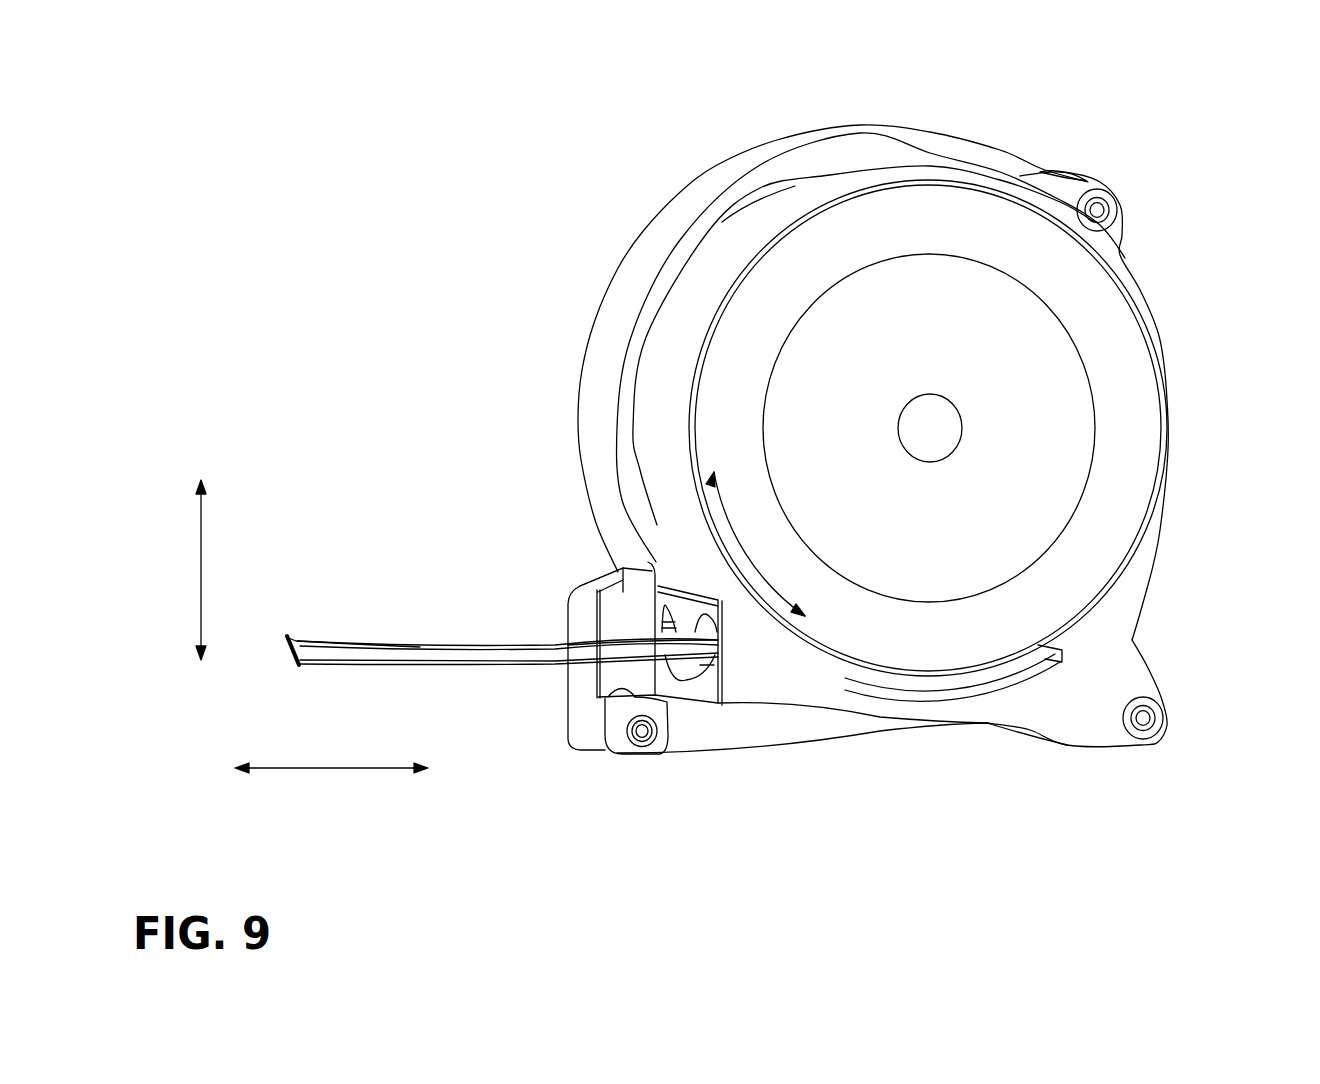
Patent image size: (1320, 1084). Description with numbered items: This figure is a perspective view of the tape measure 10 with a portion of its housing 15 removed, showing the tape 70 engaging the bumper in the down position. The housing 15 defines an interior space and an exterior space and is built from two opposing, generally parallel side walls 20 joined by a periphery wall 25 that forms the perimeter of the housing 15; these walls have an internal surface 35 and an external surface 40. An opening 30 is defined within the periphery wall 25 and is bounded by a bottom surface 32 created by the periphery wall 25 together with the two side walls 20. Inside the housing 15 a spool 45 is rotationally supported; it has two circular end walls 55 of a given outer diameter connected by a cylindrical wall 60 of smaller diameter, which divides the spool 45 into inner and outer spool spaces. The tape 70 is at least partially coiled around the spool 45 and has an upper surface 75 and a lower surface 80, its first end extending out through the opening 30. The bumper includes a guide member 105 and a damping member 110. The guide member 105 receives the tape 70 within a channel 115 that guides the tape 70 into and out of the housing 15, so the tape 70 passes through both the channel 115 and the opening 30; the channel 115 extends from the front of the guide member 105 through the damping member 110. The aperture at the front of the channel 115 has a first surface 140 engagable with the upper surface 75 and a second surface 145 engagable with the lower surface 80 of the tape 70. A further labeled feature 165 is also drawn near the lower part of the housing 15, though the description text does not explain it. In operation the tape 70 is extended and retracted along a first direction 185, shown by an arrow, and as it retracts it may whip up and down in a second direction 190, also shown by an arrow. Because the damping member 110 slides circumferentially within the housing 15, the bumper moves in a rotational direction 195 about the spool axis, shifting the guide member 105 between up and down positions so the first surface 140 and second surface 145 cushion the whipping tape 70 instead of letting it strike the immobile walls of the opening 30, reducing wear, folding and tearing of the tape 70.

The tape measure 10 is at (1203, 211).
The housing 15 is at (1103, 637).
The side walls 20 is at (632, 617).
The periphery wall 25 is at (632, 285).
The opening 30 is at (612, 622).
The bottom surface 32 is at (607, 700).
The internal surface 35 is at (940, 173).
The external surface 40 is at (713, 167).
The spool 45 is at (1065, 417).
The circular end walls 55 is at (837, 188).
The cylindrical wall 60 is at (940, 443).
The tape 70 is at (322, 647).
The upper surface 75 is at (392, 645).
The lower surface 80 is at (393, 673).
The guide member 105 is at (740, 690).
The damping member 110 is at (660, 512).
The channel 115 is at (682, 656).
The first surface 140 is at (570, 638).
The second surface 145 is at (679, 682).
The guide strip 165 is at (850, 683).
The first direction 185 is at (350, 770).
The second direction 190 is at (203, 547).
The rotational direction 195 is at (753, 565).